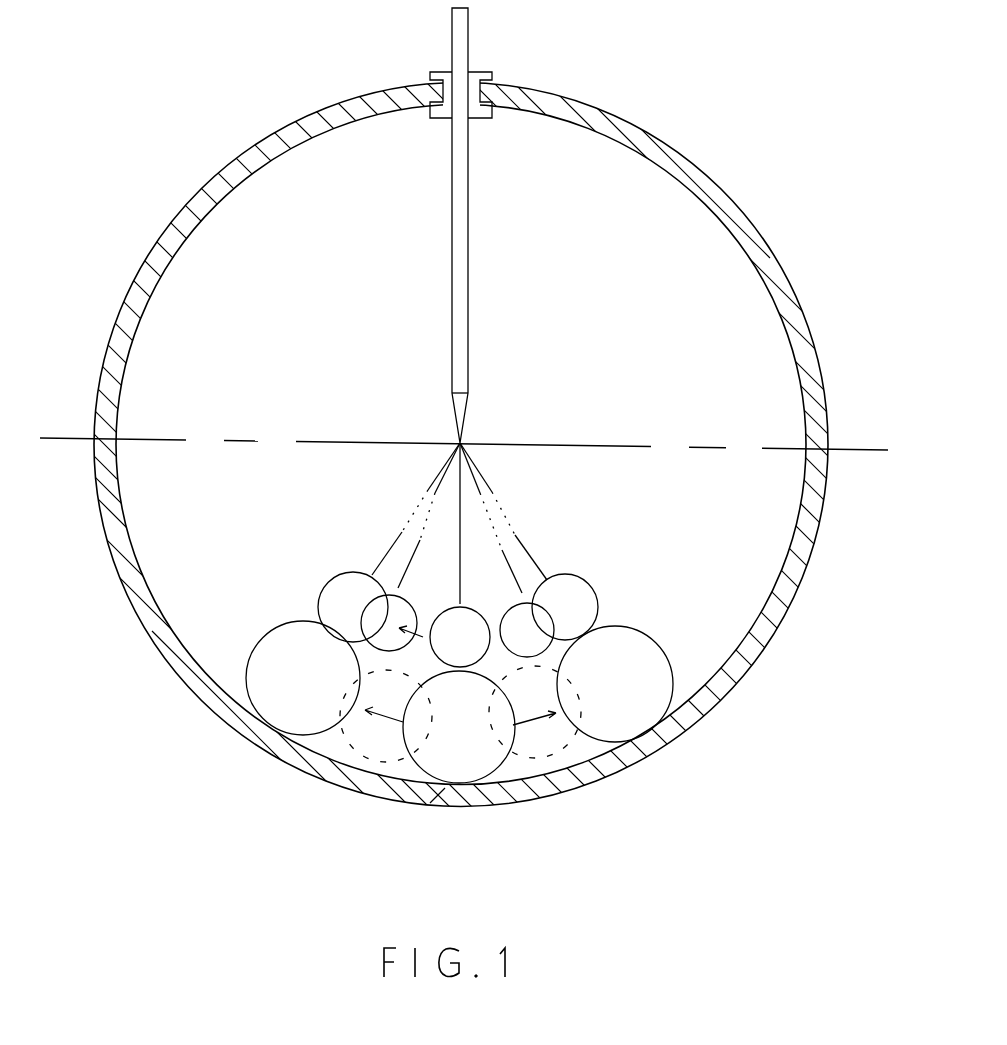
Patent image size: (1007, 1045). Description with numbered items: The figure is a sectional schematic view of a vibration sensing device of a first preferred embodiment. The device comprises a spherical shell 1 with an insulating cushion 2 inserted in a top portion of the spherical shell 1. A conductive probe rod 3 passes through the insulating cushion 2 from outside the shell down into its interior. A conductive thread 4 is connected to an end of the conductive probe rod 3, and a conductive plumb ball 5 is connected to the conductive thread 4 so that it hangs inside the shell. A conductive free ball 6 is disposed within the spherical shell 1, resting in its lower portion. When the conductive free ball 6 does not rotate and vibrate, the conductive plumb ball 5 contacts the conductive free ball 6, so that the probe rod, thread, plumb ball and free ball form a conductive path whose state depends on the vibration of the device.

The spherical shell 1 is at (798, 593).
The insulating cushion 2 is at (481, 72).
The conductive probe rod 3 is at (462, 292).
The conductive thread 4 is at (458, 547).
The conductive plumb ball 5 is at (468, 603).
The conductive free ball 6 is at (437, 810).